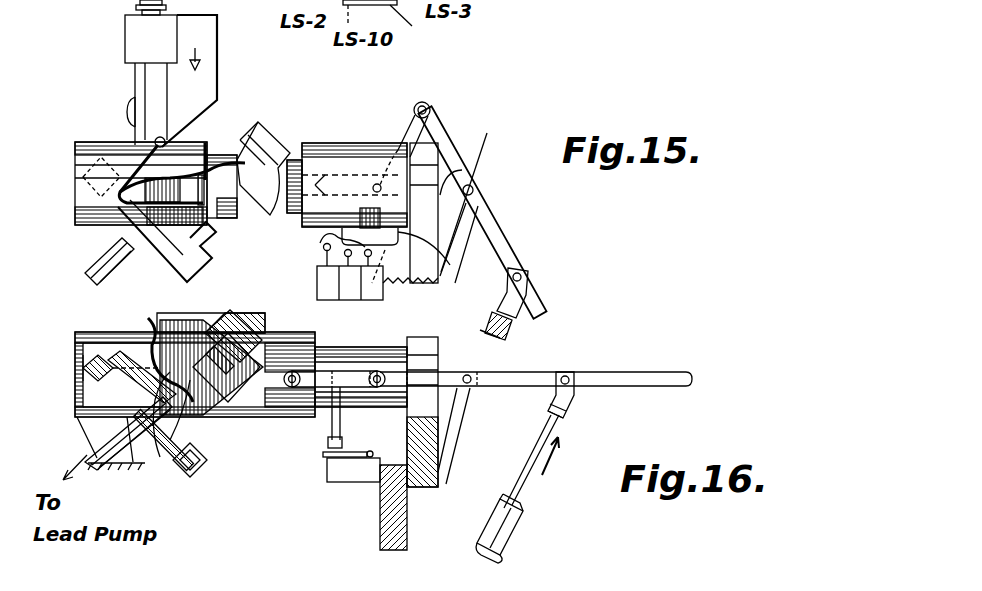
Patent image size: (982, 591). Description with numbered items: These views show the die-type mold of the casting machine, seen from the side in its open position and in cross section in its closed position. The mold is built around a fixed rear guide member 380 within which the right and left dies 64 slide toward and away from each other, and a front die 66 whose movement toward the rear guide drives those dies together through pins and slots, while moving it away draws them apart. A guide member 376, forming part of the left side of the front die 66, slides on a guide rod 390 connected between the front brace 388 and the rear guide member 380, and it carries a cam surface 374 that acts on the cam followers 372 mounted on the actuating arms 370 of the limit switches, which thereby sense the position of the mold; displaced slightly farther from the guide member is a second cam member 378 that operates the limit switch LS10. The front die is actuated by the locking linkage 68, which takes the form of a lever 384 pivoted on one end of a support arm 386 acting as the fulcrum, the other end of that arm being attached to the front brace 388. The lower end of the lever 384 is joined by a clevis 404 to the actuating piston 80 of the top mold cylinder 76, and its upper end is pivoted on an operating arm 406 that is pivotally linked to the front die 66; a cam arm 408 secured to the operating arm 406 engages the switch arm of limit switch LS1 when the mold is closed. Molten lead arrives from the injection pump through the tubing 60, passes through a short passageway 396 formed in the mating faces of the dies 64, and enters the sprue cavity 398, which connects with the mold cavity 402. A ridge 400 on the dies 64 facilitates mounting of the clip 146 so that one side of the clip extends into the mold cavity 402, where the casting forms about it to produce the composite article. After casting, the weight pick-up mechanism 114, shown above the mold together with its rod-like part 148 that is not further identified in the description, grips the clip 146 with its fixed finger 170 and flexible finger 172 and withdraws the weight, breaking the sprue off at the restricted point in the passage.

In FIG. 15, the fixed finger 170 is at (207, 43).
In FIG. 15, the weight pick-up mechanism 114 is at (228, 81).
In FIG. 15, the plunger rod 148 is at (143, 83).
In FIG. 15, the flexible finger 172 is at (140, 122).
In FIG. 15, the clip 146 is at (166, 136).
In FIG. 16, the clip 146 is at (150, 316).
In FIG. 15, the right and left dies 64 is at (205, 148).
In FIG. 16, the right and left dies 64 is at (163, 357).
In FIG. 15, the front die 66 is at (280, 132).
In FIG. 16, the front die 66 is at (242, 335).
In FIG. 15, the operating arm 406 is at (404, 130).
In FIG. 16, the operating arm 406 is at (345, 372).
In FIG. 15, the cam arm 408 is at (478, 190).
In FIG. 16, the cam arm 408 is at (332, 422).
In FIG. 15, the locking linkage 68 is at (484, 159).
In FIG. 15, the support arm 386 is at (482, 204).
In FIG. 16, the support arm 386 is at (452, 420).
In FIG. 15, the lever 384 is at (508, 232).
In FIG. 16, the lever 384 is at (505, 378).
In FIG. 15, the clevis 404 is at (530, 285).
In FIG. 16, the clevis 404 is at (572, 380).
In FIG. 15, the rear guide member 380 is at (205, 263).
In FIG. 16, the rear guide member 380 is at (208, 460).
In FIG. 15, the tubing 60 is at (104, 250).
In FIG. 16, the tubing 60 is at (90, 446).
In FIG. 15, the cam followers 372 is at (330, 242).
In FIG. 15, the actuating arms 370 is at (316, 272).
In FIG. 15, the guide member 376 is at (450, 267).
In FIG. 15, the front brace 388 is at (446, 281).
In FIG. 16, the front brace 388 is at (440, 462).
In FIG. 15, the cam surface 374 is at (398, 290).
In FIG. 15, the limit switch lead 378 is at (424, 28).
In FIG. 16, the mold cavity 402 is at (160, 328).
In FIG. 16, the ridge 400 is at (153, 377).
In FIG. 16, the guide rod 390 is at (360, 395).
In FIG. 16, the actuating piston 80 is at (560, 432).
In FIG. 16, the top mold cylinder 76 is at (509, 532).
In FIG. 16, the passageway 396 is at (160, 458).
In FIG. 16, the sprue cavity 398 is at (170, 442).